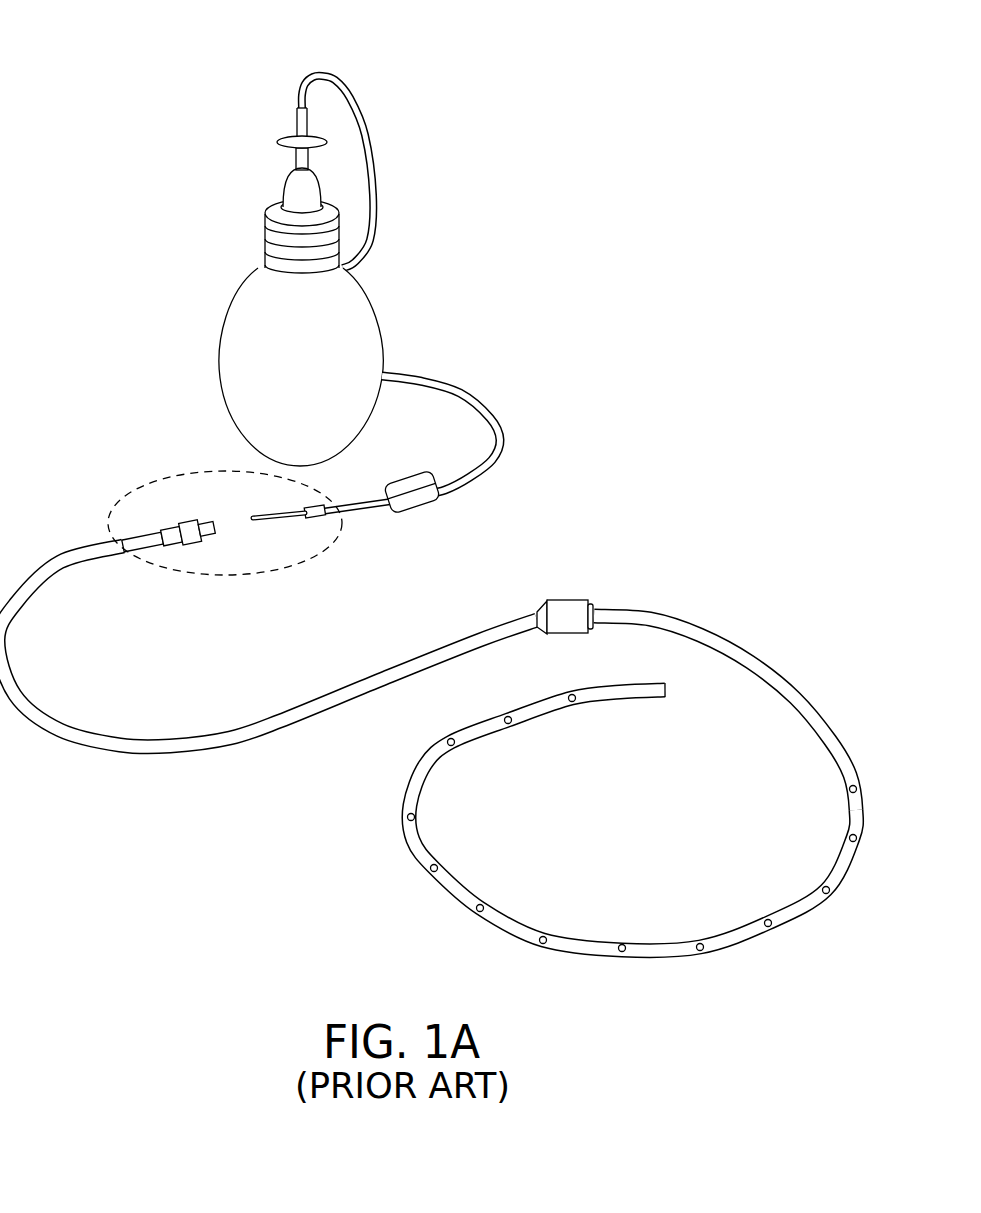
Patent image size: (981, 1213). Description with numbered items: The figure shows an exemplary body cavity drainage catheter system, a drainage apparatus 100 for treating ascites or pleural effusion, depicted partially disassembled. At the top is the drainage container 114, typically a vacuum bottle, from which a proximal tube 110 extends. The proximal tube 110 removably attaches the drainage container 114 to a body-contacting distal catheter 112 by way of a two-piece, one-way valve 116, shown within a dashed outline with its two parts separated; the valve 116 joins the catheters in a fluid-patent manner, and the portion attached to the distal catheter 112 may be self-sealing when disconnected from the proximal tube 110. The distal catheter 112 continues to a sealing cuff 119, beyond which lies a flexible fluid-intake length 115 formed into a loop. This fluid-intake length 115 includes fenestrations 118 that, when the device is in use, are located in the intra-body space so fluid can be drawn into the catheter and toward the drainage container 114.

The drainage apparatus 100 is at (428, 482).
The proximal tube 110 is at (455, 389).
The distal catheter 112 is at (733, 641).
The drainage container 114 is at (358, 322).
The flexible fluid-intake length 115 is at (372, 828).
The one-way valve 116 is at (145, 488).
The fenestrations 118 is at (415, 817).
The sealing cuff 119 is at (565, 600).